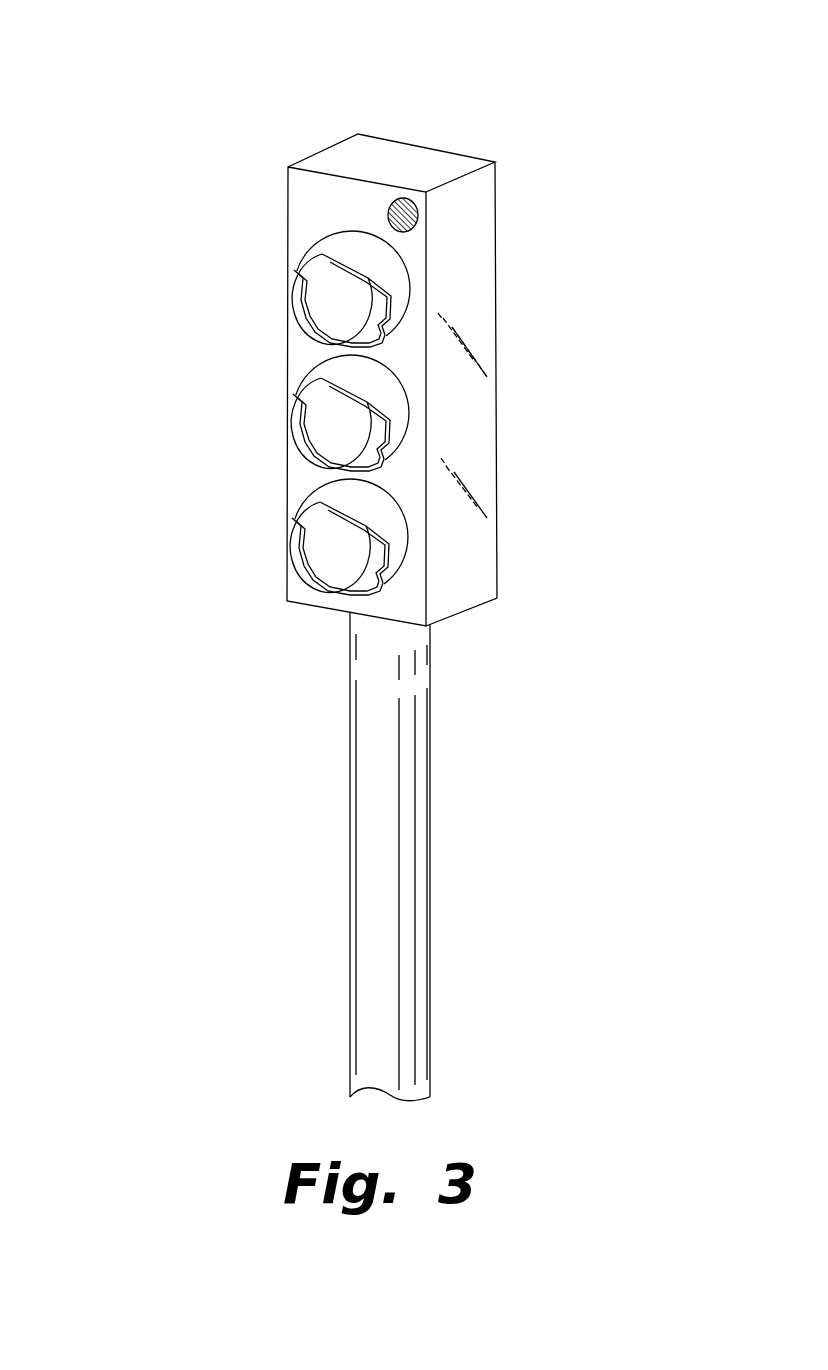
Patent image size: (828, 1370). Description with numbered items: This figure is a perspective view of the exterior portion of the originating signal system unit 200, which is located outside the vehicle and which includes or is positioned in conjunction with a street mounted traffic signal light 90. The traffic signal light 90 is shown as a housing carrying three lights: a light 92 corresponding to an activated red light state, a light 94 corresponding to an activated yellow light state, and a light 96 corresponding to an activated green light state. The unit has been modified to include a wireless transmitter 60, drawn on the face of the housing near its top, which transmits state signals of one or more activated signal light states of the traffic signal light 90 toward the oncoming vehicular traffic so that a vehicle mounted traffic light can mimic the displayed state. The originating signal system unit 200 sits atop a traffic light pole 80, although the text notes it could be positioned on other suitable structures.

The originating signal system unit 200 is at (298, 74).
The traffic signal light 90 is at (497, 437).
The wireless transmitter 60 is at (418, 215).
The light 92 is at (297, 295).
The light 94 is at (297, 418).
The light 96 is at (297, 538).
The traffic light pole 80 is at (430, 812).